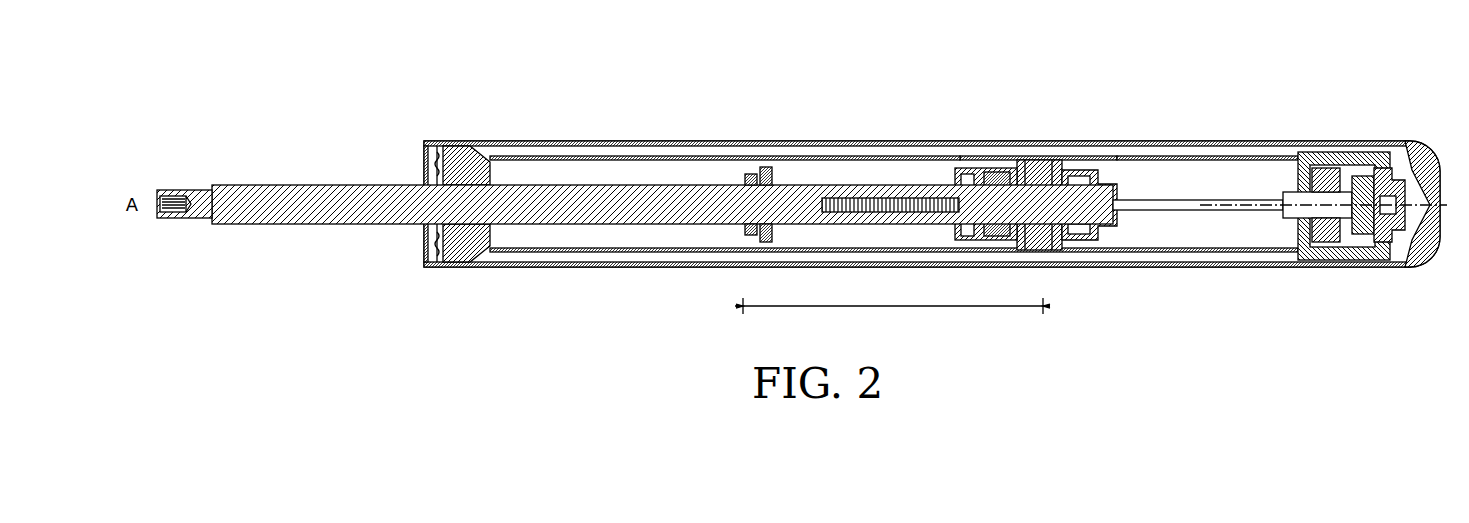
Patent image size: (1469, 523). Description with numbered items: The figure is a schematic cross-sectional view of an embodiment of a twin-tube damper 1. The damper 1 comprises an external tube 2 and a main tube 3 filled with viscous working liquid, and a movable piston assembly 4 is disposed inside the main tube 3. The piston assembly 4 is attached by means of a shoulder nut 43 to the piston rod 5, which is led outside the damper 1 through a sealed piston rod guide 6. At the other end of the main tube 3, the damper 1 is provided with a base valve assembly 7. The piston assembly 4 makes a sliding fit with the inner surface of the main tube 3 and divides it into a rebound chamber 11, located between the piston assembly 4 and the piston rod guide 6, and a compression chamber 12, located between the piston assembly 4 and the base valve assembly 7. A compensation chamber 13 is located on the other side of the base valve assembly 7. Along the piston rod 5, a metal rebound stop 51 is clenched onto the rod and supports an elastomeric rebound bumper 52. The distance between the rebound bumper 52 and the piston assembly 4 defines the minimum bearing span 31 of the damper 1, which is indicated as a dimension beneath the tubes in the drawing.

The twin-tube damper 1 is at (921, 129).
The external tube 2 is at (675, 141).
The main tube 3 is at (898, 140).
The piston assembly 4 is at (1035, 152).
The piston rod 5 is at (527, 198).
The piston rod guide 6 is at (462, 170).
The base valve assembly 7 is at (1392, 152).
The rebound chamber 11 is at (600, 175).
The compression chamber 12 is at (1237, 167).
The compensation chamber 13 is at (1003, 152).
The minimum bearing span 31 is at (892, 316).
The shoulder nut 43 is at (1092, 170).
The rebound stop 51 is at (768, 168).
The rebound bumper 52 is at (752, 176).